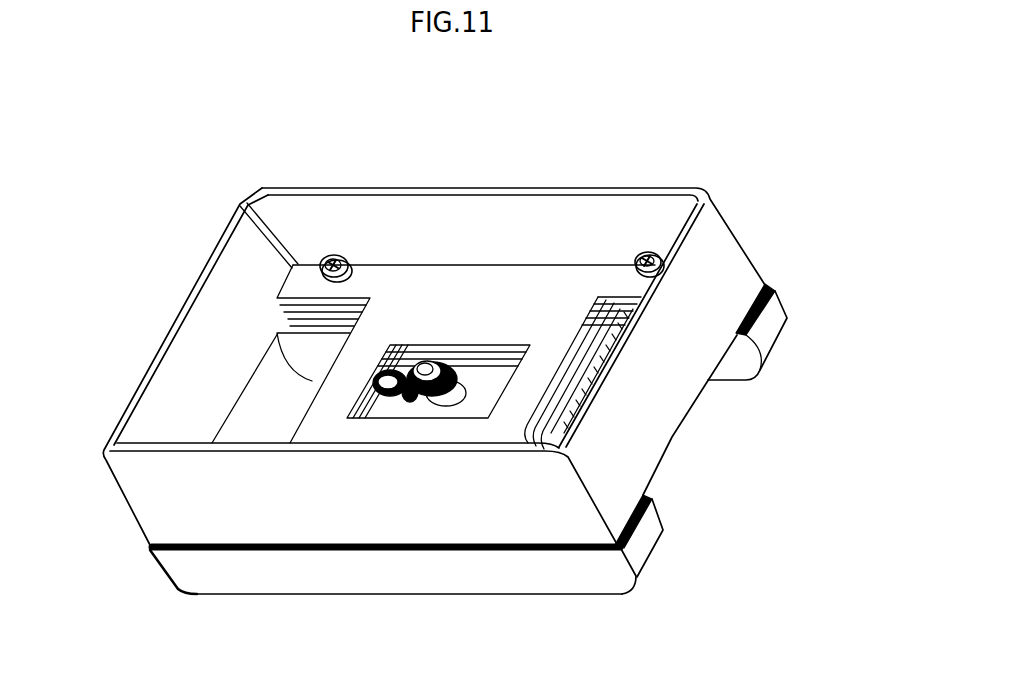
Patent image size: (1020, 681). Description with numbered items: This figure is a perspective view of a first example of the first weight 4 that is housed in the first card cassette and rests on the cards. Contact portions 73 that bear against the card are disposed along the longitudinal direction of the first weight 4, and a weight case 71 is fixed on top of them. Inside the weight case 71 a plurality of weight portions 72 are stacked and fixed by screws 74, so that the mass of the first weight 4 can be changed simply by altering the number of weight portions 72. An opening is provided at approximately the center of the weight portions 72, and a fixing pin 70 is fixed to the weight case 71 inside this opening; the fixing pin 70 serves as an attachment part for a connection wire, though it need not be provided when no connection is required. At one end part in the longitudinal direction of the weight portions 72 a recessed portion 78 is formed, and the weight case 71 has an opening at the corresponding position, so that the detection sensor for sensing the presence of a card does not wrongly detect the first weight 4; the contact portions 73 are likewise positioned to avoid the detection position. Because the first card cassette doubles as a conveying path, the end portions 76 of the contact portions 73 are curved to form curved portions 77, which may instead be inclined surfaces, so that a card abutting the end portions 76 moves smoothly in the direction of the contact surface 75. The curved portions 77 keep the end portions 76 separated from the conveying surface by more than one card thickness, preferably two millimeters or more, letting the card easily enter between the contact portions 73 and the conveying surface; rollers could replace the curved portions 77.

The first weight 4 is at (105, 297).
The fixing pin 70 is at (419, 346).
The weight case 71 is at (721, 268).
The weight portions 72 is at (505, 312).
The contact portions 73 is at (738, 378).
The screws 74 is at (334, 258).
The contact surface 75 is at (403, 600).
The end portions 76 is at (768, 318).
The curved portions 77 is at (770, 352).
The recessed portion 78 is at (323, 367).